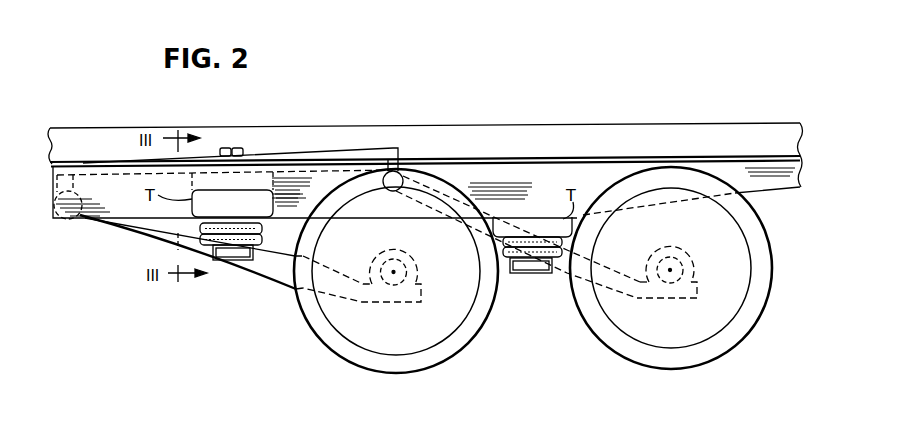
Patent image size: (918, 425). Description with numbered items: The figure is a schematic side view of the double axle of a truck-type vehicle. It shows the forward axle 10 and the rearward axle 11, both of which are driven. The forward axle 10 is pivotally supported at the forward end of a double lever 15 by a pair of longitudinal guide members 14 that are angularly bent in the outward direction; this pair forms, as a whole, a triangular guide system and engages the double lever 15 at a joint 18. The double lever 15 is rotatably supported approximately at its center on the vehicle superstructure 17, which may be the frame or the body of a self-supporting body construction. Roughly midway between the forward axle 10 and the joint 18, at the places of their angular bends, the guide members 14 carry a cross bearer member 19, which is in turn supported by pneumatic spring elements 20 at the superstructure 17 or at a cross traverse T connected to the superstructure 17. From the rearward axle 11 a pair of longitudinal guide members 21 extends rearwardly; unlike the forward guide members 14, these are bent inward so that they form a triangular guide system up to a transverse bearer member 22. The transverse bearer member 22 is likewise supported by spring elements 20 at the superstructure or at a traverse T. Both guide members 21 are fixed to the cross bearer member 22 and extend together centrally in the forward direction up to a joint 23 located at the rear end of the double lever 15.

The forward axle 10 is at (410, 272).
The rearward axle 11 is at (682, 273).
The longitudinal guide member 14 is at (156, 238).
The double lever 15 is at (350, 152).
The vehicle superstructure 17 is at (548, 193).
The joint 18 is at (92, 163).
The cross bearer member 19 is at (234, 254).
The pneumatic spring element 20 is at (268, 250).
The longitudinal guide member 21 is at (558, 263).
The transverse bearer member 22 is at (530, 273).
The joint 23 is at (401, 170).